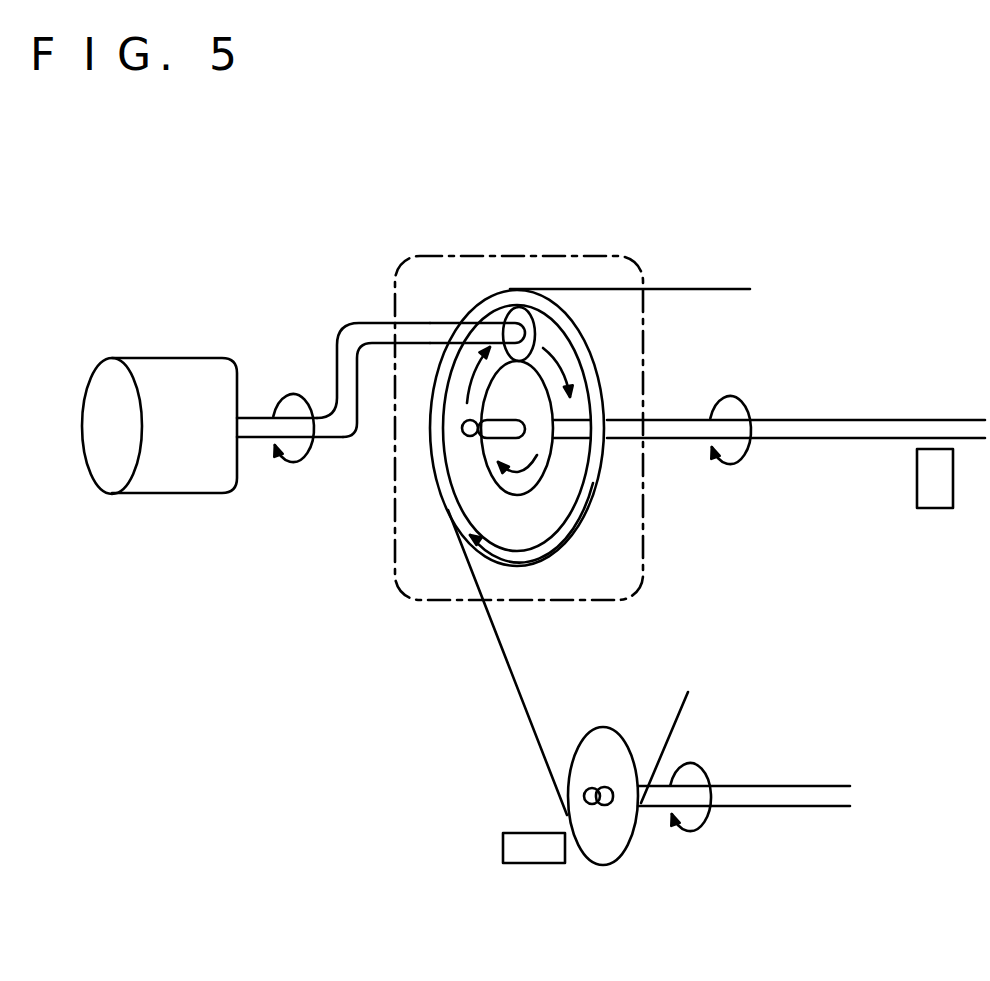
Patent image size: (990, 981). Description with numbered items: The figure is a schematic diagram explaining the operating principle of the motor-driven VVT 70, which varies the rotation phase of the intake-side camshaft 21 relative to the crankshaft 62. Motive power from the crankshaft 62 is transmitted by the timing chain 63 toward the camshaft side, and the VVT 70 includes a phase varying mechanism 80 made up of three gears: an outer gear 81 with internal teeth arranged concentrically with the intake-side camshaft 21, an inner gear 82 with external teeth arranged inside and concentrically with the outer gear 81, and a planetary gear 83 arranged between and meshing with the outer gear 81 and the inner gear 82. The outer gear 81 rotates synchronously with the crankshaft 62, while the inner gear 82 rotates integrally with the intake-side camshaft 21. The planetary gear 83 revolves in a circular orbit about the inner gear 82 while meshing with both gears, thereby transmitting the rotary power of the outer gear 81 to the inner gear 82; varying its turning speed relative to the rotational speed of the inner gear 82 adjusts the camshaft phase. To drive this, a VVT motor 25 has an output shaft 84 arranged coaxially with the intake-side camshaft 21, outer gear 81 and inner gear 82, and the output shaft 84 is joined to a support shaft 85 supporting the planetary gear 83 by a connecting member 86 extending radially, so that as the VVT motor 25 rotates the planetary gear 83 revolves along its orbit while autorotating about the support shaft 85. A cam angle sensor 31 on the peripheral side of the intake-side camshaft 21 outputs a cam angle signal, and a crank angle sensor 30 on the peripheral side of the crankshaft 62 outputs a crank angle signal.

The intake-side camshaft 21 is at (853, 418).
The VVT motor 25 is at (172, 358).
The crank angle sensor 30 is at (503, 843).
The cam angle sensor 31 is at (915, 487).
The crankshaft 62 is at (801, 786).
The timing chain 63 is at (524, 705).
The VVT 70 is at (400, 247).
The phase varying mechanism 80 is at (550, 255).
The outer gear 81 is at (598, 345).
The inner gear 82 is at (548, 455).
The planetary gear 83 is at (537, 330).
The output shaft 84 is at (262, 414).
The support shaft 85 is at (430, 323).
The connecting member 86 is at (337, 370).